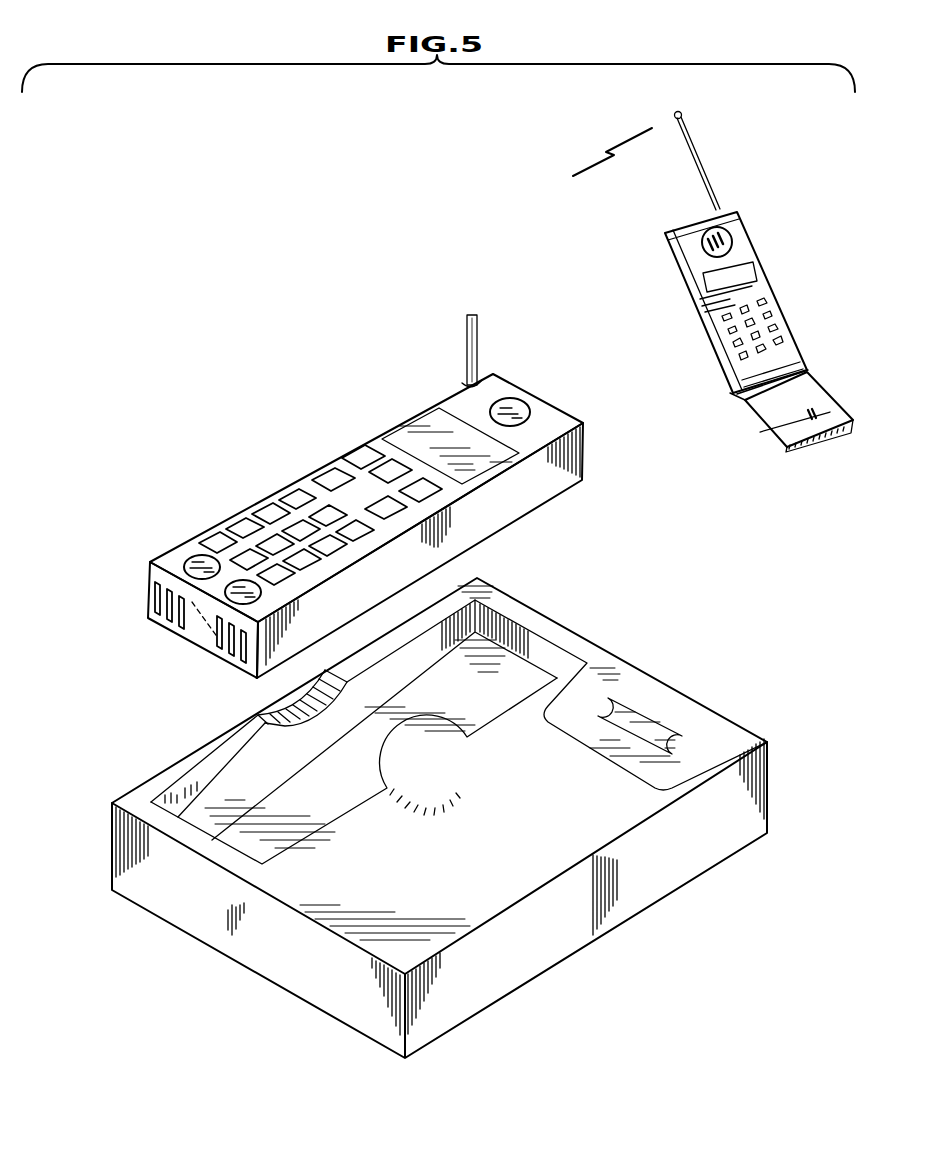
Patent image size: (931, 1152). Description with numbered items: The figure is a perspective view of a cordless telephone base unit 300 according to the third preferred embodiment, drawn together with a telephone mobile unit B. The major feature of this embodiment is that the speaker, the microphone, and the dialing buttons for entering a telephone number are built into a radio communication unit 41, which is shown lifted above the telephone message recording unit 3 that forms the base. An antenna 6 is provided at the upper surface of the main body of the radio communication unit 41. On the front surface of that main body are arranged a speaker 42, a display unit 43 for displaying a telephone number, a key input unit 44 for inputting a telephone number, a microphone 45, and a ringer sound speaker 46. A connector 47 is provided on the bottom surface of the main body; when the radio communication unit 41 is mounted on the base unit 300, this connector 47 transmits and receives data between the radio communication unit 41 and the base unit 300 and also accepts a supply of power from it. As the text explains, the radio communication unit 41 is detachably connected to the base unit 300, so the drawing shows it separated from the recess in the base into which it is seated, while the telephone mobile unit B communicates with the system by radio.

The telephone mobile unit B is at (760, 240).
The telephone message recording unit 3 is at (682, 707).
The cordless telephone base unit 300 is at (606, 534).
The antenna 6 is at (466, 336).
The radio communication unit 41 is at (361, 479).
The speaker 42 is at (532, 404).
The display unit 43 is at (406, 412).
The key input unit 44 is at (298, 472).
The microphone 45 is at (188, 556).
The ringer sound speaker 46 is at (240, 596).
The connector 47 is at (215, 640).